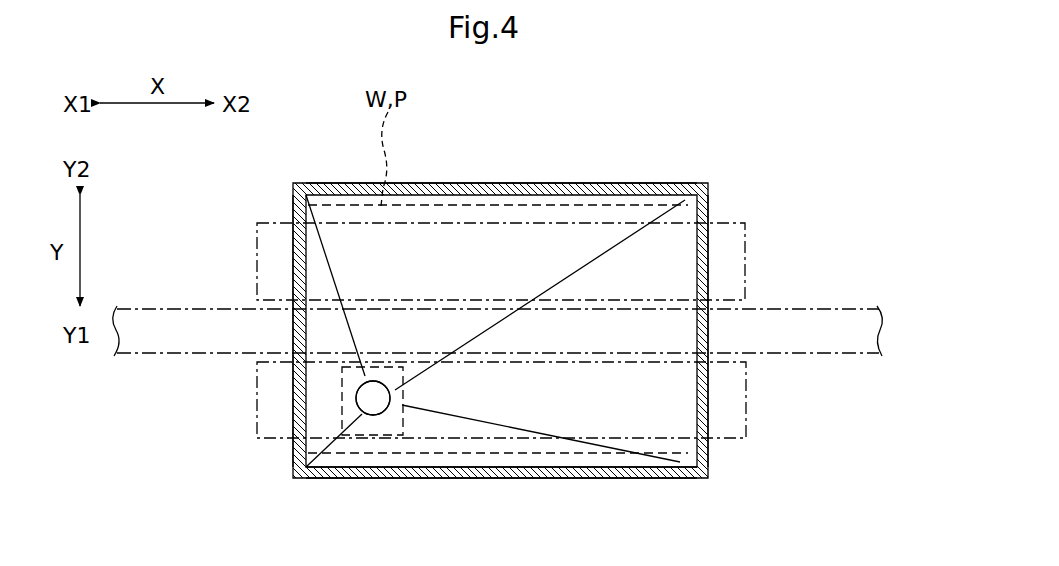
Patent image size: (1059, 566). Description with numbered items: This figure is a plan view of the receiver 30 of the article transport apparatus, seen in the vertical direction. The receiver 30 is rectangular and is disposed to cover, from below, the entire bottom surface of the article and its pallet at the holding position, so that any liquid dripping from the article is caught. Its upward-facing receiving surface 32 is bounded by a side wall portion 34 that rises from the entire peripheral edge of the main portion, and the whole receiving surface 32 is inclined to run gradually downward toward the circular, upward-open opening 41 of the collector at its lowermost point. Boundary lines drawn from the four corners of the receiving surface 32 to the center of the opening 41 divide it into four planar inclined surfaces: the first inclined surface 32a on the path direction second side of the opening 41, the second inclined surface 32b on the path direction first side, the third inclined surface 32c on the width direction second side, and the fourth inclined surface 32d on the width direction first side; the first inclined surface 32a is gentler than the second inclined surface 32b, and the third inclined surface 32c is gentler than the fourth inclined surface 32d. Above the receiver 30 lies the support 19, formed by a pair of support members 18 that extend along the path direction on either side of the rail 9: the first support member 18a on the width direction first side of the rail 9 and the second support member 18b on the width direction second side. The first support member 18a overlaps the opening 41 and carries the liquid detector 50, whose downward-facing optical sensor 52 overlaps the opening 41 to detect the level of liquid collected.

The rail 9 is at (200, 308).
The support member 18 is at (581, 260).
The first support member 18a is at (746, 395).
The second support member 18b is at (745, 258).
The support 19 is at (590, 400).
The receiver 30 is at (579, 296).
The receiving surface 32 is at (500, 310).
The first inclined surface 32a is at (667, 410).
The second inclined surface 32b is at (317, 412).
The third inclined surface 32c is at (457, 250).
The fourth inclined surface 32d is at (441, 425).
The side wall portion 34 is at (650, 478).
The opening 41 is at (367, 397).
The liquid detector 50 is at (440, 401).
The optical sensor 52 is at (403, 385).